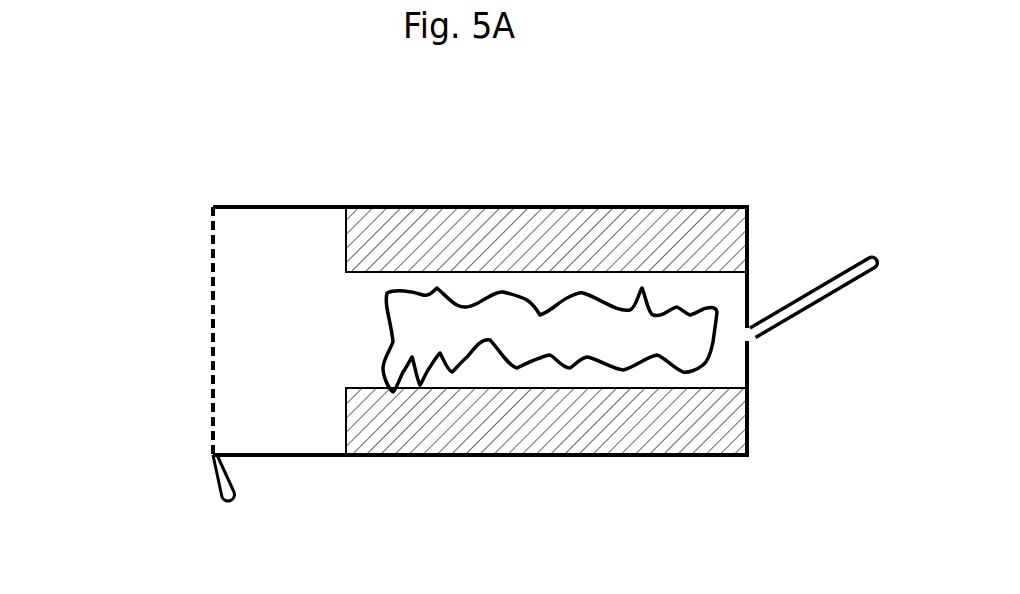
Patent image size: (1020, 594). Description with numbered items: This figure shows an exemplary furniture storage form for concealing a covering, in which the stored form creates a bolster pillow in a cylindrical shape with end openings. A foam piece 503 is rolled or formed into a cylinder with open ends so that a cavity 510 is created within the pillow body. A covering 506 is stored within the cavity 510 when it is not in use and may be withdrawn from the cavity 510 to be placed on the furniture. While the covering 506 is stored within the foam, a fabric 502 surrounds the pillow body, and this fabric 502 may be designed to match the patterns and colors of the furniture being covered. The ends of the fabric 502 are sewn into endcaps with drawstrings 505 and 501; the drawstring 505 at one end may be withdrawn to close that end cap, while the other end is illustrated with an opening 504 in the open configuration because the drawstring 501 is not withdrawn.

The drawstring 501 is at (213, 487).
The fabric 502 is at (683, 206).
The foam piece 503 is at (708, 428).
The opening 504 is at (213, 262).
The drawstring 505 is at (863, 253).
The covering 506 is at (440, 292).
The cavity 510 is at (362, 310).